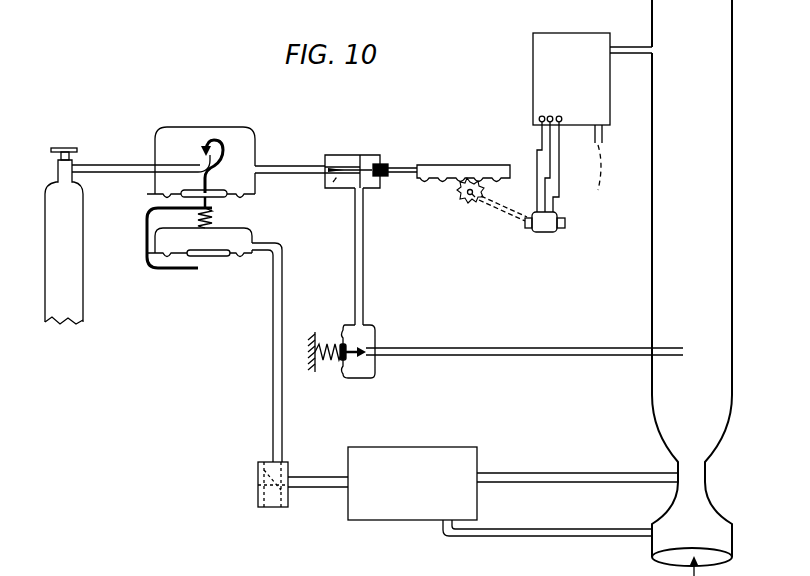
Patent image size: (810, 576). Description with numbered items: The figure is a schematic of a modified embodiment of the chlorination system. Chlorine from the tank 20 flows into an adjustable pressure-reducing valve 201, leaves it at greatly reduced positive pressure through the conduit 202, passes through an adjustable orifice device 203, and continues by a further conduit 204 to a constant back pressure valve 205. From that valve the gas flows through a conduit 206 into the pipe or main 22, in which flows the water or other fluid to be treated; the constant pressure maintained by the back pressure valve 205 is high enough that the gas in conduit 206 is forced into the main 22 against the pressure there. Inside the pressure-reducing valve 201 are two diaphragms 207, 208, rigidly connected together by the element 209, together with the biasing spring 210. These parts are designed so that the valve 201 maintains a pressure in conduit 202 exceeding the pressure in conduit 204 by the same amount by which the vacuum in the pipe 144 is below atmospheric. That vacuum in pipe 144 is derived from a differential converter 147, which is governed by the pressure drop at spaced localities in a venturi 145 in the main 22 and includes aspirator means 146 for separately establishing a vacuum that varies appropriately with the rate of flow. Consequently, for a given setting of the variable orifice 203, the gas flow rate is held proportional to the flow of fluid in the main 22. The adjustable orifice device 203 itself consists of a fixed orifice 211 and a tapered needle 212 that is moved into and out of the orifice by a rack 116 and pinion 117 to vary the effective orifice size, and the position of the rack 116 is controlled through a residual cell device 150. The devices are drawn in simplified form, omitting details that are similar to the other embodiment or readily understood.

The tank 20 is at (55, 268).
The main 22 is at (733, 224).
The rack 116 is at (468, 142).
The pinion 117 is at (460, 201).
The pipe 144 is at (273, 385).
The venturi 145 is at (712, 491).
The aspirator means 146 is at (281, 508).
The differential converter 147 is at (392, 522).
The residual cell device 150 is at (527, 56).
The adjustable pressure-reducing valve 201 is at (157, 130).
The conduit 202 is at (277, 164).
The adjustable orifice device 203 is at (335, 156).
The conduit 204 is at (364, 259).
The constant back pressure valve 205 is at (377, 327).
The conduit 206 is at (510, 365).
The diaphragm 207 is at (248, 200).
The diaphragm 208 is at (236, 258).
The element 209 is at (143, 239).
The biasing spring 210 is at (217, 216).
The fixed orifice 211 is at (334, 188).
The tapered needle 212 is at (360, 166).